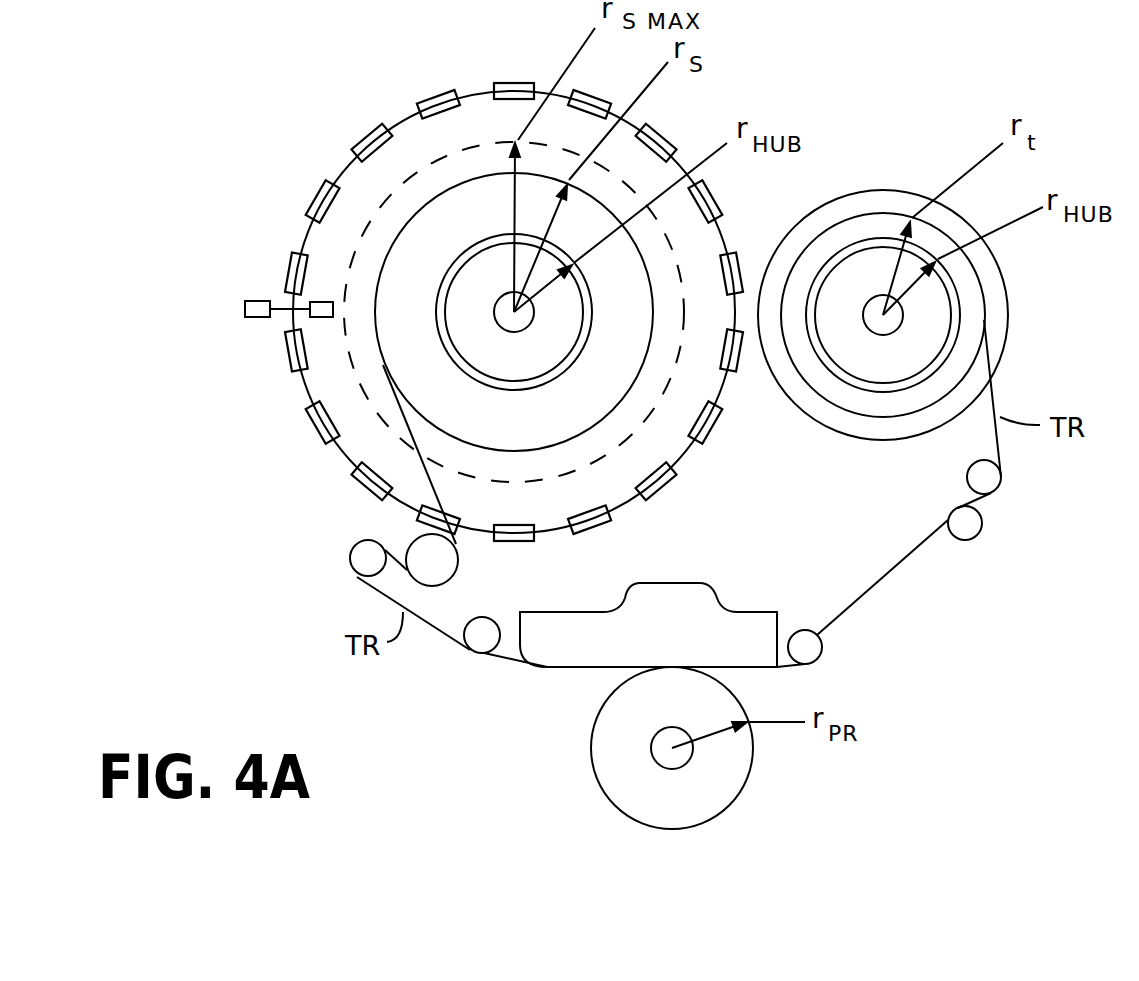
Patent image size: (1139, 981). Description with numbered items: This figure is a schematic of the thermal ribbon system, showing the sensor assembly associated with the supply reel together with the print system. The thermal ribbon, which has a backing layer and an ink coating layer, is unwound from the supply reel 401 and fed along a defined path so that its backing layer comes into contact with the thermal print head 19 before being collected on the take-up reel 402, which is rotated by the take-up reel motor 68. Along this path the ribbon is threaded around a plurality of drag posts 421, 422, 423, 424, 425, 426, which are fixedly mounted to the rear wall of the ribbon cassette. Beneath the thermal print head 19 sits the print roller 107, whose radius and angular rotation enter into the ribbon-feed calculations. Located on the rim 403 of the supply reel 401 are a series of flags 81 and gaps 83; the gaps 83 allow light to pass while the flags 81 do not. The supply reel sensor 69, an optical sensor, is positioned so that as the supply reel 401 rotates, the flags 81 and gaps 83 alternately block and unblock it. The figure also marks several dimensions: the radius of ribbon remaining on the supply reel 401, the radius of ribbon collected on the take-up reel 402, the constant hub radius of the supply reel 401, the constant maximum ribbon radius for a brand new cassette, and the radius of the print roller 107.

The thermal print head 19 is at (688, 583).
The take-up reel motor 68 is at (1007, 340).
The supply reel sensor 69 is at (258, 300).
The flags 81 is at (430, 98).
The gaps 83 is at (340, 165).
The print roller 107 is at (610, 800).
The supply reel 401 is at (488, 242).
The take-up reel 402 is at (957, 288).
The rim 403 is at (297, 390).
The drag post 421 is at (360, 561).
The drag post 422 is at (493, 615).
The drag post 423 is at (850, 580).
The drag post 424 is at (984, 524).
The drag post 425 is at (1001, 479).
The drag post 426 is at (410, 543).